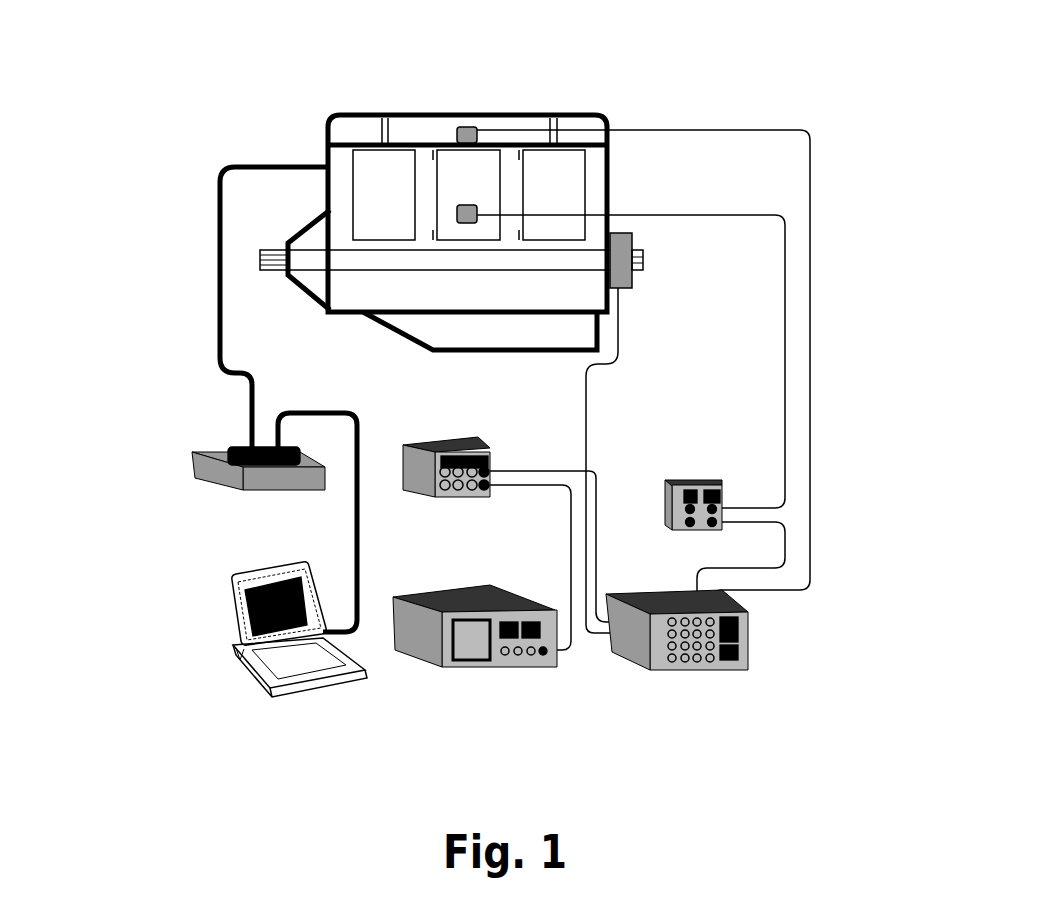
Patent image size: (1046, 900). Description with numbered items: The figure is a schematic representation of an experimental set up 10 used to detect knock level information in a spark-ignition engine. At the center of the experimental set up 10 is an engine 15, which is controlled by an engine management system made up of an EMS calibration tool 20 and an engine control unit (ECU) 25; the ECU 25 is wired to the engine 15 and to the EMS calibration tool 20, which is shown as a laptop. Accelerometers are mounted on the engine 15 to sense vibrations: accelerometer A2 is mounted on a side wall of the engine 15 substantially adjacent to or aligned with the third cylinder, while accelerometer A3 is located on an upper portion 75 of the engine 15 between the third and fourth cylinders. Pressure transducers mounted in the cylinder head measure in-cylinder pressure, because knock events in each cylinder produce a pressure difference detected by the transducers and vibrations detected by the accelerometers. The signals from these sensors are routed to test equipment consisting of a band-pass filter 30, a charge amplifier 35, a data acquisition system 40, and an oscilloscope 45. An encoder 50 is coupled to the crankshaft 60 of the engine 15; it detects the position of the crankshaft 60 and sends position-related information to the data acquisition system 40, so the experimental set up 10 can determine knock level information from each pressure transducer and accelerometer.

The experimental set up 10 is at (114, 195).
The engine 15 is at (338, 113).
The EMS calibration tool 20 is at (232, 664).
The engine control unit (ECU) 25 is at (202, 475).
The band-pass filter 30 is at (423, 437).
The charge amplifier 35 is at (720, 488).
The data acquisition system 40 is at (735, 665).
The oscilloscope 45 is at (418, 653).
The encoder 50 is at (616, 233).
The crankshaft 60 is at (278, 277).
The upper portion of the engine 75 is at (477, 117).
The accelerometer A2 is at (468, 225).
The accelerometer A3 is at (453, 137).